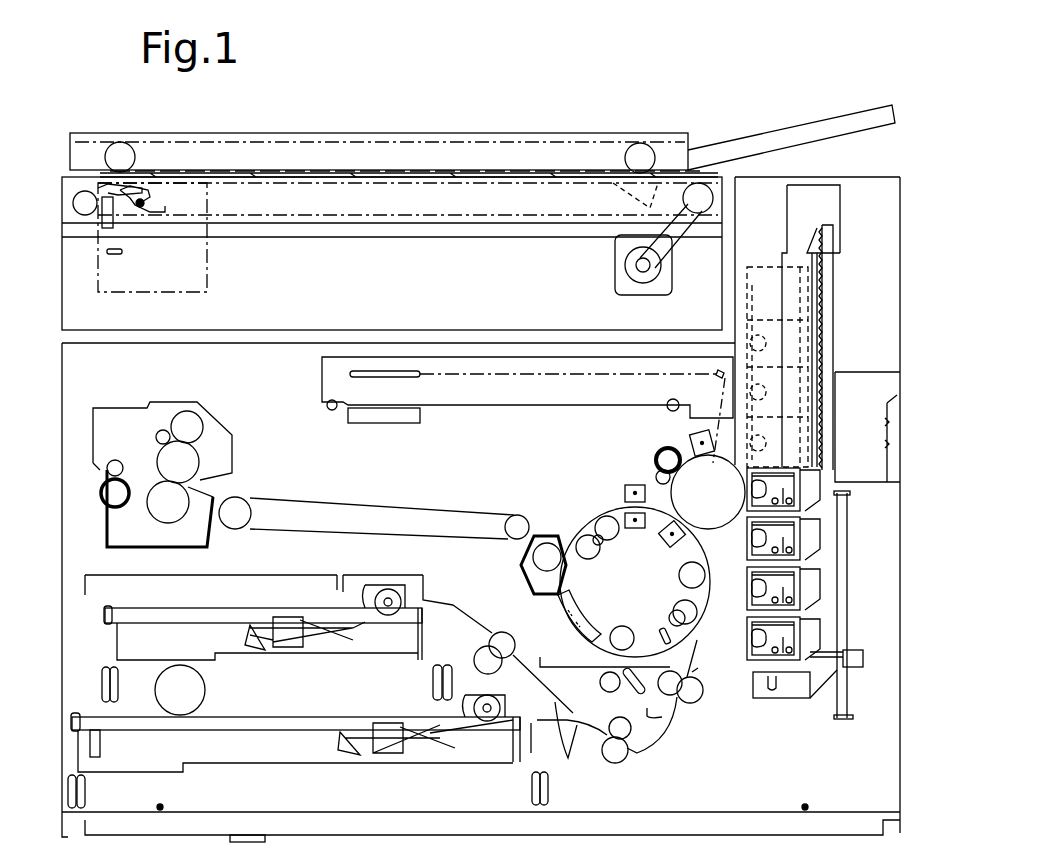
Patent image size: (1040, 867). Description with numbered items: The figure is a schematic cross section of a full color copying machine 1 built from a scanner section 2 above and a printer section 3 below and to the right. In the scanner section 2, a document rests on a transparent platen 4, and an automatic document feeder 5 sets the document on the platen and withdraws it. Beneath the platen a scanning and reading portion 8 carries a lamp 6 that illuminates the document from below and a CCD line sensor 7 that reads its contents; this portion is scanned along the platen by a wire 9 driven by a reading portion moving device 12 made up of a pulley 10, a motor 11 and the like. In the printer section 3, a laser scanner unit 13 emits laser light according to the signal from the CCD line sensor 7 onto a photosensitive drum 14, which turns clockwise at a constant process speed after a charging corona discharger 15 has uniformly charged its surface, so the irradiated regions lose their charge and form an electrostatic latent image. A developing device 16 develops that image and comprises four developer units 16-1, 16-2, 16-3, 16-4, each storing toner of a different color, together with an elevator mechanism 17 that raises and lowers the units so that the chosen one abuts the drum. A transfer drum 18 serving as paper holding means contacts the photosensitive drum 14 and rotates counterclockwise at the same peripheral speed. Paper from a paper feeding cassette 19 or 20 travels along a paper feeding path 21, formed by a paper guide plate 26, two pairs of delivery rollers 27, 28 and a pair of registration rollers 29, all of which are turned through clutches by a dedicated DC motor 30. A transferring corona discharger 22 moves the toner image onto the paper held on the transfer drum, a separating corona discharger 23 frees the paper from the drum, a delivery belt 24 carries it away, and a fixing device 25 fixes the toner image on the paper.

The full color copying machine 1 is at (943, 370).
The scanner section 2 is at (680, 123).
The printer section 3 is at (907, 253).
The transparent platen 4 is at (372, 168).
The automatic document feeder 5 is at (518, 133).
The lamp 6 is at (150, 195).
The CCD line sensor 7 is at (115, 258).
The scanning and reading portion 8 is at (207, 265).
The wire 9 is at (498, 215).
The pulley 10 is at (703, 205).
The motor 11 is at (612, 272).
The reading portion moving device 12 is at (570, 253).
The laser scanner unit 13 is at (537, 410).
The photosensitive drum 14 is at (667, 490).
The charging corona discharger 15 is at (693, 438).
The developing device 16 is at (805, 707).
The developer unit 16-1 is at (803, 495).
The developer unit 16-2 is at (803, 538).
The developer unit 16-3 is at (803, 588).
The developer unit 16-4 is at (803, 640).
The elevator mechanism 17 is at (865, 667).
The transfer drum 18 is at (600, 648).
The paper feeding cassette 19 is at (222, 620).
The paper feeding cassette 20 is at (295, 742).
The paper feeding path 21 is at (683, 762).
The transferring corona discharger 22 is at (667, 547).
The separating corona discharger 23 is at (623, 492).
The delivery belt 24 is at (365, 505).
The fixing device 25 is at (217, 418).
The paper guide plate 26 is at (569, 750).
The delivery rollers 27 is at (497, 637).
The delivery rollers 28 is at (613, 757).
The registration rollers 29 is at (685, 698).
The DC motor 30 is at (205, 690).